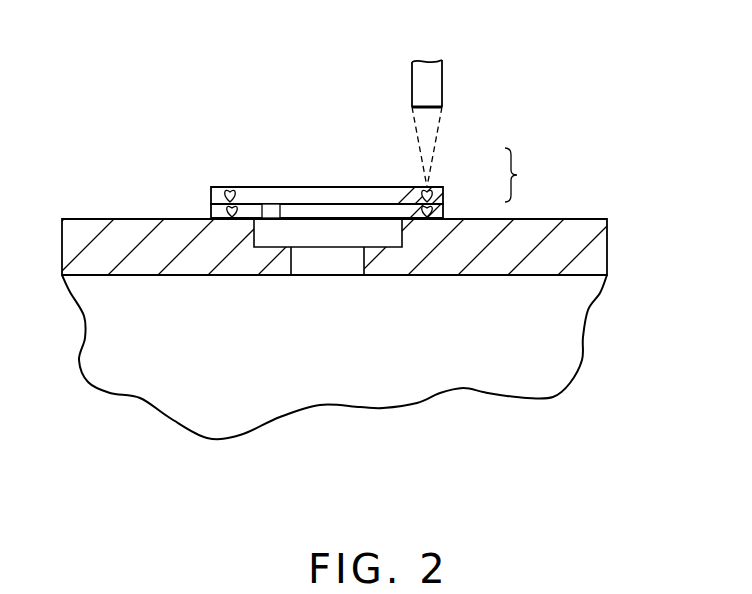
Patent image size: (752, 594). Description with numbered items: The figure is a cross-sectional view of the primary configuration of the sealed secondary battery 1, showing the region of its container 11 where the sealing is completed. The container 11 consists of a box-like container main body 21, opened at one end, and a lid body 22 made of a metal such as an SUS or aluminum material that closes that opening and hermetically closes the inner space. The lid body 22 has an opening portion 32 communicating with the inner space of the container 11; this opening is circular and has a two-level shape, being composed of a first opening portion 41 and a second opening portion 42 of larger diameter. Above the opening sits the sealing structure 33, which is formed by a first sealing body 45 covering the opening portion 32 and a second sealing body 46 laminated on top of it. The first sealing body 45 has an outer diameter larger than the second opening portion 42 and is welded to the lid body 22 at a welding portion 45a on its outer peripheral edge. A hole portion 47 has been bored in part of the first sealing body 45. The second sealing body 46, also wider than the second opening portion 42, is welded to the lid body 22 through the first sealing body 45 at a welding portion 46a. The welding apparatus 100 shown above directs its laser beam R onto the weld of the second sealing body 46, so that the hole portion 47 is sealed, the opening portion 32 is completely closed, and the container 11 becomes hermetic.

The sealed secondary battery 1 is at (507, 452).
The container 11 is at (554, 410).
The container main body 21 is at (578, 322).
The lid body 22 is at (578, 218).
The opening portion 32 is at (332, 292).
The sealing structure 33 is at (525, 175).
The first opening portion 41 is at (296, 262).
The second opening portion 42 is at (398, 237).
The first sealing body 45 is at (445, 211).
The welding portion 45a is at (225, 210).
The second sealing body 46 is at (445, 192).
The welding portion 46a is at (228, 191).
The hole portion 47 is at (279, 208).
The welding apparatus 100 is at (437, 80).
The laser beam R is at (437, 143).